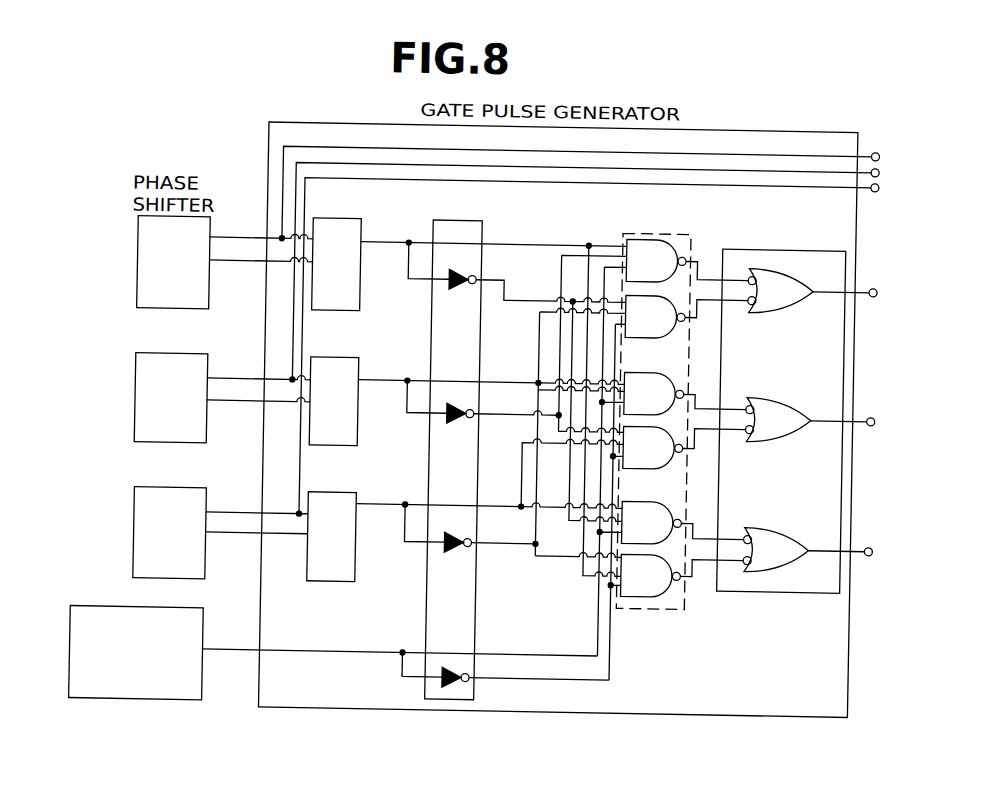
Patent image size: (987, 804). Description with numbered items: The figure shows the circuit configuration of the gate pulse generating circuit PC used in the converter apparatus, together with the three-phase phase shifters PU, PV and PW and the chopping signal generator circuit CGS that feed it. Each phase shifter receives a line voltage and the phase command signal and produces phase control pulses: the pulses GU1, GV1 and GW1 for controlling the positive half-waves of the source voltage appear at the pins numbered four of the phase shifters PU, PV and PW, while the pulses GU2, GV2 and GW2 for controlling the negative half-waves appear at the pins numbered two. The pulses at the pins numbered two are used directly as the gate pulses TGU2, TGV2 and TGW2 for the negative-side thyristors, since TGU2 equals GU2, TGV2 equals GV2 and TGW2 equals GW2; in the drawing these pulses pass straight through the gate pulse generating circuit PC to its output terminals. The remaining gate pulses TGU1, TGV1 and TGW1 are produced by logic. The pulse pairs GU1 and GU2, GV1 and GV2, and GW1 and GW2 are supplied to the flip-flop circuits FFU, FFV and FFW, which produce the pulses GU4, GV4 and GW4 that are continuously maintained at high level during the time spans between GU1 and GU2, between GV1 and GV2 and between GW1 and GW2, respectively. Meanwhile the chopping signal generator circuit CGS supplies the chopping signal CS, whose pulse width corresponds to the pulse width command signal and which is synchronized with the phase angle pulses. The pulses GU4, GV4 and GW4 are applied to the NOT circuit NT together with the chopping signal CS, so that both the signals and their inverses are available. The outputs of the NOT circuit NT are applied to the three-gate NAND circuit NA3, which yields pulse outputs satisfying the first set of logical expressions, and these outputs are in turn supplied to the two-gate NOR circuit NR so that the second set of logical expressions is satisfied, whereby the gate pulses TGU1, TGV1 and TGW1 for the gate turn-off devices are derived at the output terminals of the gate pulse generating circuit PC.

The gate pulse generating circuit PC is at (268, 130).
The phase shifter PU is at (174, 262).
The phase shifter PV is at (171, 398).
The phase shifter PW is at (170, 533).
The flip-flop circuit FFU is at (337, 264).
The flip-flop circuit FFV is at (334, 401).
The flip-flop circuit FFW is at (332, 537).
The NOT circuit NT is at (449, 196).
The three-gate NAND circuit NA3 is at (630, 227).
The two-gate NOR circuit NR is at (747, 241).
The chopping signal generator circuit CGS is at (133, 608).
The phase control pulse GU2 is at (261, 227).
The phase control pulse GU1 is at (261, 275).
The phase control pulse GV2 is at (258, 367).
The phase control pulse GV1 is at (258, 416).
The phase control pulse GW2 is at (257, 501).
The phase control pulse GW1 is at (256, 551).
The pulse GU4 is at (545, 247).
The pulse GV4 is at (533, 385).
The pulse GW4 is at (394, 503).
The chopping signal CS is at (225, 649).
The gate pulse TGU2 is at (879, 142).
The gate pulse TGV2 is at (880, 162).
The gate pulse TGW2 is at (879, 181).
The gate pulse TGU1 is at (904, 296).
The gate pulse TGV1 is at (900, 425).
The gate pulse TGW1 is at (901, 555).